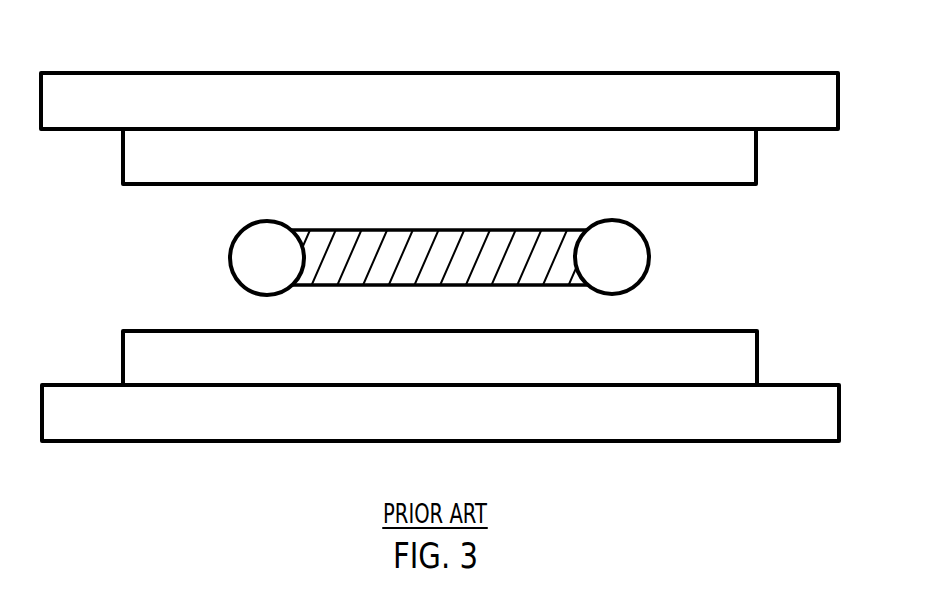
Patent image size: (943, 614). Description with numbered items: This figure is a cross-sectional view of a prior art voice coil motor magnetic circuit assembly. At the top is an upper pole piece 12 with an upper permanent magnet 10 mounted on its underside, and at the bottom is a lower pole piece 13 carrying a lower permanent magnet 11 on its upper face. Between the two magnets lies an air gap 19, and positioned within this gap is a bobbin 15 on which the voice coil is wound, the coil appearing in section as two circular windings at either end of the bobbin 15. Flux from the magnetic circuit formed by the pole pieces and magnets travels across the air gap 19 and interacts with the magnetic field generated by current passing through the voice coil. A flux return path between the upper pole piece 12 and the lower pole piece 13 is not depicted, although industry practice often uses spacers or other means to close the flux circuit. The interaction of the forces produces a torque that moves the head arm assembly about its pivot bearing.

The upper permanent magnet 10 is at (744, 157).
The lower permanent magnet 11 is at (746, 353).
The upper pole piece 12 is at (698, 82).
The lower pole piece 13 is at (702, 432).
The bobbin 15 is at (478, 278).
The air gap 19 is at (115, 276).